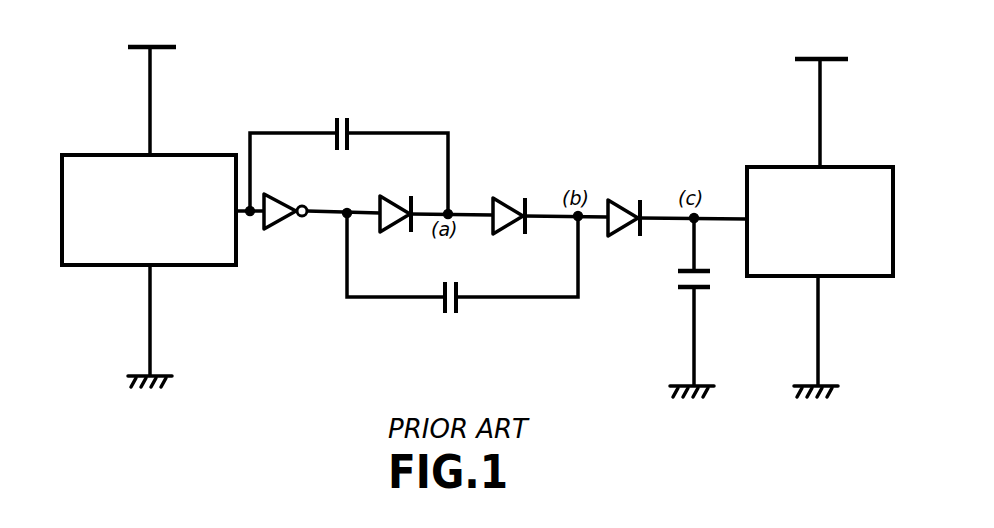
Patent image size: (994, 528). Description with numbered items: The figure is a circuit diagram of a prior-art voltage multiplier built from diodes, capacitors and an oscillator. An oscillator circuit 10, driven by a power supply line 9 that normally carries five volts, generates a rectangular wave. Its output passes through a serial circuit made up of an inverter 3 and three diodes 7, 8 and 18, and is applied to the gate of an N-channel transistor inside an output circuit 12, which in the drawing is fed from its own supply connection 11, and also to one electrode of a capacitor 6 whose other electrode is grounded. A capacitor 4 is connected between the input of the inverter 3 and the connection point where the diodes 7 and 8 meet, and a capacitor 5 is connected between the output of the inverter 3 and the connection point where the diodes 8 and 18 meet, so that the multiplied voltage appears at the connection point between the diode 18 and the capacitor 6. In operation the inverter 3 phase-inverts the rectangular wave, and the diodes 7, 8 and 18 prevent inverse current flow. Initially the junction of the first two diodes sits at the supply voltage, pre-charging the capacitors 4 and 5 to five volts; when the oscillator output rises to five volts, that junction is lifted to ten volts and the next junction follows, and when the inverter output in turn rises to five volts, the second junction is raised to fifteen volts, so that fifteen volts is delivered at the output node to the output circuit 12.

The inverter 3 is at (272, 222).
The capacitor 4 is at (352, 122).
The capacitor 5 is at (440, 306).
The capacitor 6 is at (684, 290).
The diode 7 is at (392, 200).
The diode 8 is at (500, 196).
The diode 18 is at (620, 200).
The power supply line 9 is at (160, 46).
The oscillator circuit 10 is at (178, 154).
The power supply terminal 11 is at (812, 56).
The output circuit 12 is at (848, 166).